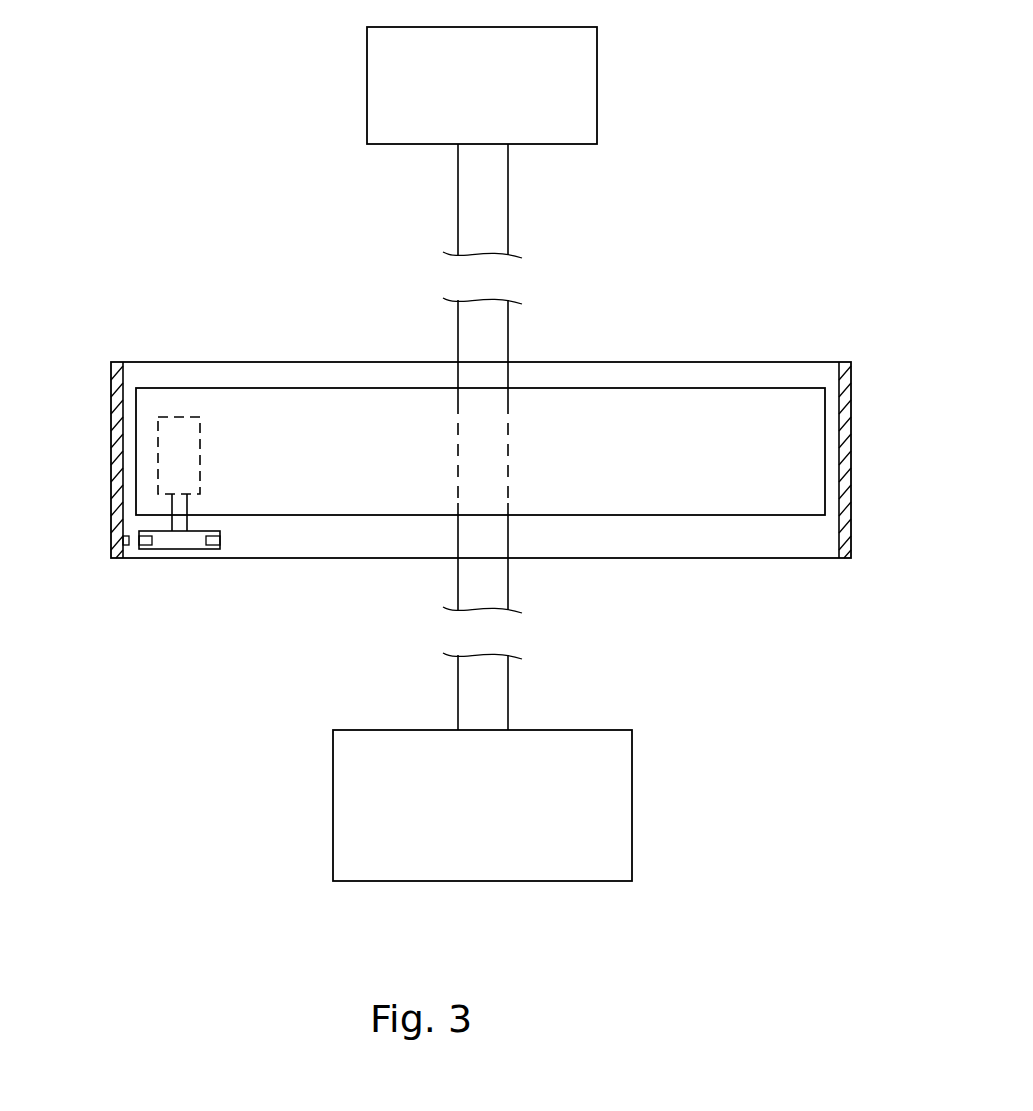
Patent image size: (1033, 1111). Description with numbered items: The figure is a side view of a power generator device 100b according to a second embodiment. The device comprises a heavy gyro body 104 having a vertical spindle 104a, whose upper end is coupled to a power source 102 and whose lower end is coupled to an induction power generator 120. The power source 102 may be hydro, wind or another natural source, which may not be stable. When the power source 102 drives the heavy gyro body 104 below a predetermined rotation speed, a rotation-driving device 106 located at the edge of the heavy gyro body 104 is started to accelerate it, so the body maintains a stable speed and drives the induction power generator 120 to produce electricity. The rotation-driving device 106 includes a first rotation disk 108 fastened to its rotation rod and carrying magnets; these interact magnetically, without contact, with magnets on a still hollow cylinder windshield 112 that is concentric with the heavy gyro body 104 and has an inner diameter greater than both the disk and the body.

The power generator device 100b is at (212, 65).
The power source 102 is at (597, 82).
The heavy gyro body 104 is at (325, 405).
The vertical spindle 104a is at (498, 334).
The rotation-driving device 106 is at (179, 423).
The first rotation disk 108 is at (180, 543).
The hollow cylinder windshield 112 is at (118, 455).
The induction power generator 120 is at (632, 803).